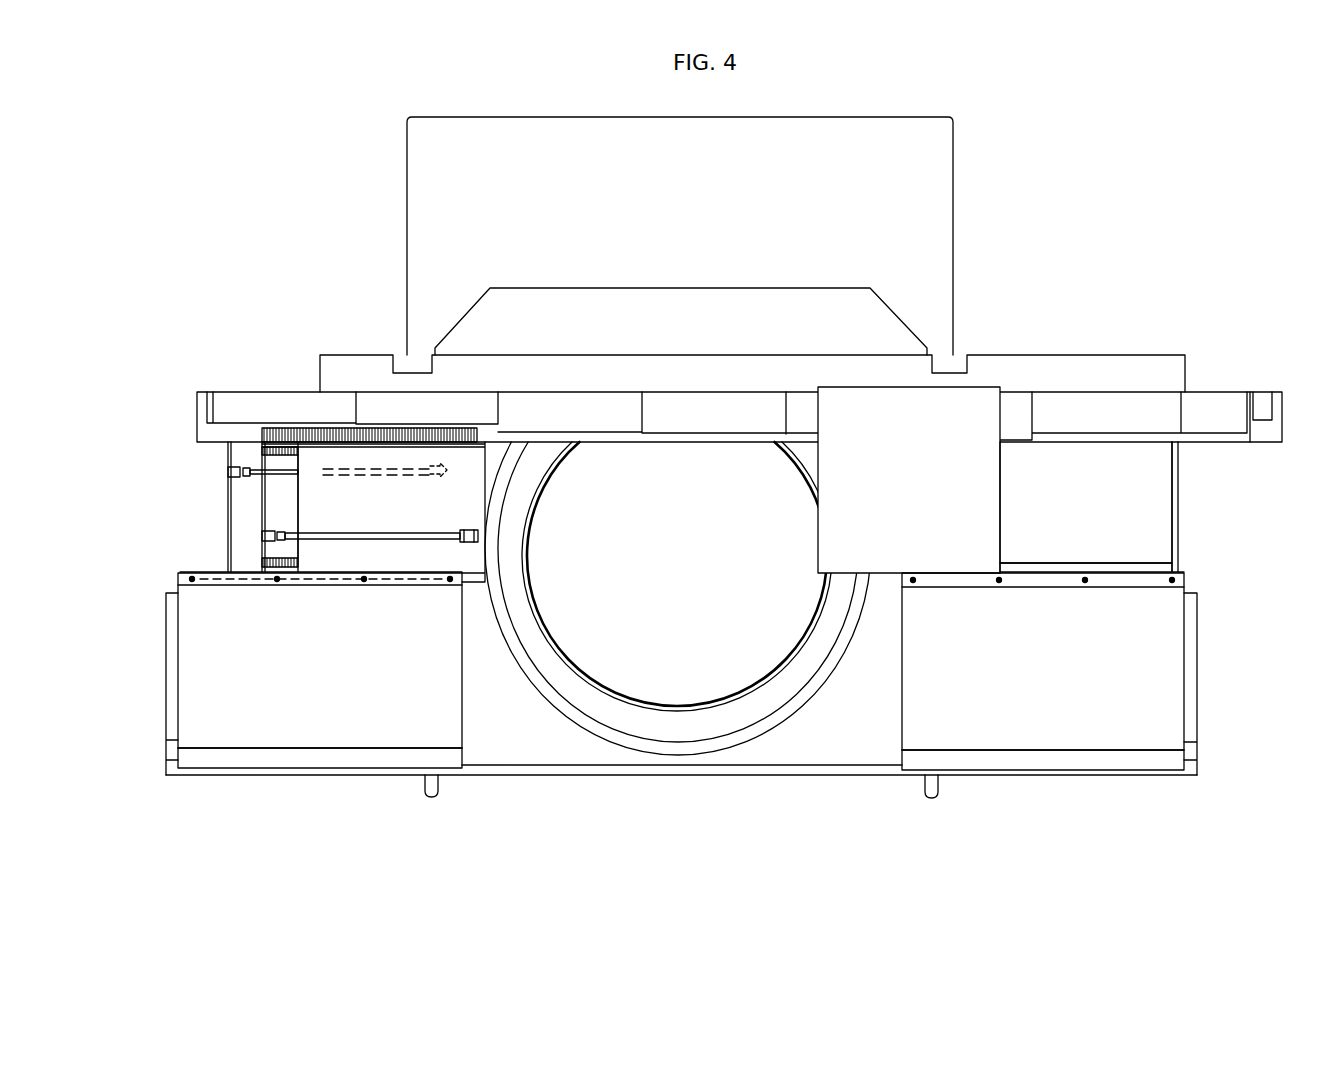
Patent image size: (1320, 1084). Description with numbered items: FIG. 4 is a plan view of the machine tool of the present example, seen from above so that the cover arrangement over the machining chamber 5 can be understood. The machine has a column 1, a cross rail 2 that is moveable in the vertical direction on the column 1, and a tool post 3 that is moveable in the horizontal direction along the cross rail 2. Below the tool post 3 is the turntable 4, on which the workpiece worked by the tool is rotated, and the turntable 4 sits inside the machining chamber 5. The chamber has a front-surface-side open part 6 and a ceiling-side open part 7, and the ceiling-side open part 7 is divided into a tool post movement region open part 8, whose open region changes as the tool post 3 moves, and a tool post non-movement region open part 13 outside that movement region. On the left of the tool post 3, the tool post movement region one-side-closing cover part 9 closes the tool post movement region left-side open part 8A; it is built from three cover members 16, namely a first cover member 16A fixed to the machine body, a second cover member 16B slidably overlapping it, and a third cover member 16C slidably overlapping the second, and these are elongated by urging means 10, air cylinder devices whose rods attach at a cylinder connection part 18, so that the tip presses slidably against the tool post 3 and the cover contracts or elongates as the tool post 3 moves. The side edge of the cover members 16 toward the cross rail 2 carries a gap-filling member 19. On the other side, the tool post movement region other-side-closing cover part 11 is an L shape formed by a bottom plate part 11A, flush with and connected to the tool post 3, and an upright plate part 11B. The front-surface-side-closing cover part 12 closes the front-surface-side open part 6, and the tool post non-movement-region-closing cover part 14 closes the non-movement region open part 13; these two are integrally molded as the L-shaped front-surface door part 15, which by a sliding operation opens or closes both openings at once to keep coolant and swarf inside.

The column 1 is at (960, 157).
The cross rail 2 is at (234, 392).
The tool post 3 is at (977, 387).
The turntable 4 is at (188, 690).
The machining chamber 5 is at (507, 705).
The front-surface-side open part 6 is at (776, 777).
The ceiling-side open part 7 is at (831, 526).
The tool post movement region open part 8 is at (808, 462).
The tool post movement region left-side open part 8A is at (713, 485).
The tool post movement region one-side-closing cover part 9 is at (212, 552).
The urging means 10 is at (331, 534).
The tool post movement region other-side-closing cover part 11 is at (1135, 507).
The bottom plate part 11A is at (1175, 518).
The upright plate part 11B is at (1178, 565).
The front-surface-side-closing cover part 12 is at (1002, 772).
The tool post non-movement region open part 13 is at (715, 612).
The tool post non-movement-region-closing cover part 14 is at (1165, 657).
The front-surface door part 15 is at (1141, 784).
The cover members 16 is at (332, 580).
The first cover member 16A is at (243, 562).
The second cover member 16B is at (288, 565).
The third cover member 16C is at (387, 562).
The cylinder connection part 18 is at (262, 537).
The gap-filling member 19 is at (318, 437).